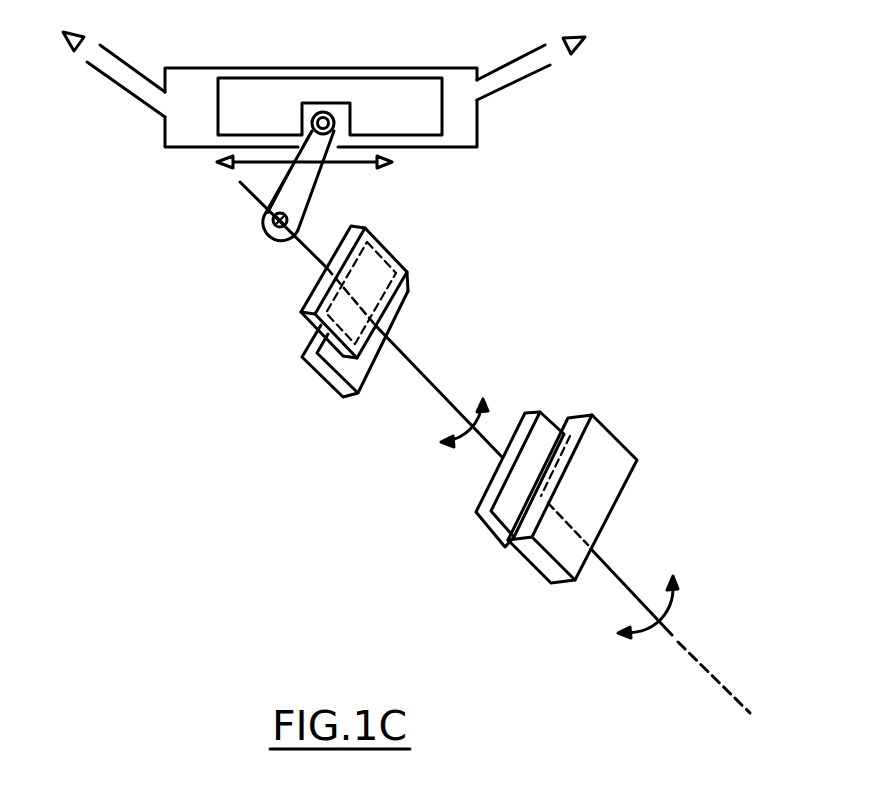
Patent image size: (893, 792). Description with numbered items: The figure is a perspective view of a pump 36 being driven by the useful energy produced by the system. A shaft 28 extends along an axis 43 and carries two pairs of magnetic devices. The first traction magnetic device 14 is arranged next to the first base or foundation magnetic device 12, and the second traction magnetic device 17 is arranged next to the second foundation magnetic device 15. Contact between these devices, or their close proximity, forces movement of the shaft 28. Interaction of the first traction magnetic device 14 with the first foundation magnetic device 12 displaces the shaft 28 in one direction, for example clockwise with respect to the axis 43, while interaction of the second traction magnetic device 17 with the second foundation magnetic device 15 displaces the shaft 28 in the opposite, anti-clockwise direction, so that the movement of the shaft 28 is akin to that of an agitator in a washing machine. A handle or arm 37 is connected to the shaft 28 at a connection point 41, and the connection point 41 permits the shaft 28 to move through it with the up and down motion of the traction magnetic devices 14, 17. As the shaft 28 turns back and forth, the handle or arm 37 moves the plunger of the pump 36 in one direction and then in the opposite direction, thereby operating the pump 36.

The pump 36 is at (357, 68).
The handle or arm 37 is at (311, 188).
The connection point 41 is at (270, 234).
The second foundation (base) magnetic device 15 is at (383, 248).
The second traction magnetic device 17 is at (312, 364).
The shaft 28 is at (432, 380).
The first base or foundation magnetic device 12 is at (478, 501).
The first traction magnetic device 14 is at (610, 503).
The axis 43 is at (708, 675).